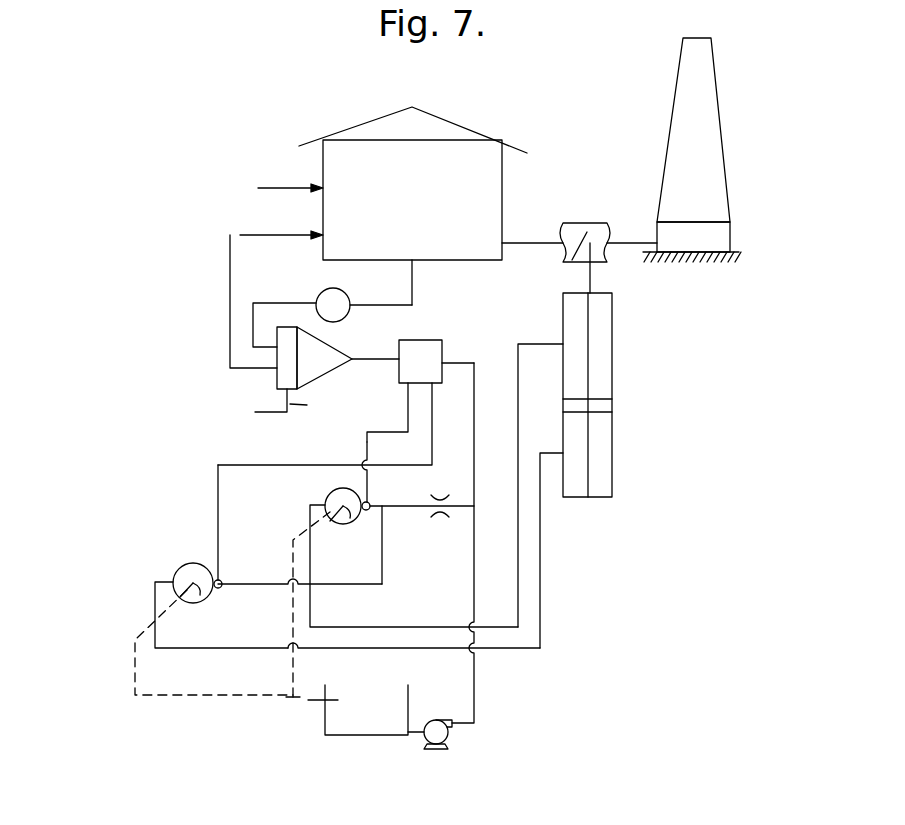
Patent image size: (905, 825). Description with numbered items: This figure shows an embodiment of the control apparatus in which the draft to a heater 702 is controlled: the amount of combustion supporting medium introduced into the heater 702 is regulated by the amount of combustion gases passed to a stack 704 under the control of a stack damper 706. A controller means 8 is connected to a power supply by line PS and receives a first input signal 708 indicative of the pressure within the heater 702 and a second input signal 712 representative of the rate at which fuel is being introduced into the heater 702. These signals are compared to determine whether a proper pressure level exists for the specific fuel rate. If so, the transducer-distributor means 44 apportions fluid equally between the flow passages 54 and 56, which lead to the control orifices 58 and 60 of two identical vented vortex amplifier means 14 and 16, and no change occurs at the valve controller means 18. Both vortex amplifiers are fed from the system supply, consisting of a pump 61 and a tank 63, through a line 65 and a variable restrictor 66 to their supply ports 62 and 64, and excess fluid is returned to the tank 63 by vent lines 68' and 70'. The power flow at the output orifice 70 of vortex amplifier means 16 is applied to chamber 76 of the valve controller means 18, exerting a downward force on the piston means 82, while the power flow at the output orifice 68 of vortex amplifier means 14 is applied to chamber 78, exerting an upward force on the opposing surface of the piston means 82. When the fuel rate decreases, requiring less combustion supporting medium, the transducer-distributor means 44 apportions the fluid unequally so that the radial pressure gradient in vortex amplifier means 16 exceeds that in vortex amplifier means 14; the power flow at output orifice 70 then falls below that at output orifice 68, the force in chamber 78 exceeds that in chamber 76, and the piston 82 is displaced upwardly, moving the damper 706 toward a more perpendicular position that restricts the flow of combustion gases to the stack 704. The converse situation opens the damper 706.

The heater 702 is at (503, 196).
The stack 704 is at (716, 133).
The stack damper 706 is at (583, 222).
The second input signal 712 is at (230, 265).
The first input signal 708 is at (270, 302).
The controller means 8 is at (327, 343).
The transducer-distributor means 44 is at (442, 348).
The flow passage 56 is at (408, 422).
The flow passage 54 is at (436, 423).
The control orifice 60 is at (366, 446).
The control orifice 58 is at (218, 512).
The vortex amplifier means 16 is at (326, 494).
The output orifice 70 is at (368, 566).
The vortex amplifier means 14 is at (183, 566).
The supply port 62 is at (222, 579).
The supply port 64 is at (368, 512).
The variable restrictor 66 is at (440, 516).
The output orifice 68 is at (319, 615).
The vent line 68' is at (179, 642).
The vent line 70' is at (280, 604).
The tank 63 is at (350, 737).
The pump 61 is at (433, 720).
The line 65 is at (478, 697).
The valve controller means 18 is at (612, 385).
The piston means 82 is at (598, 406).
The chamber 76 is at (585, 356).
The chamber 78 is at (585, 463).